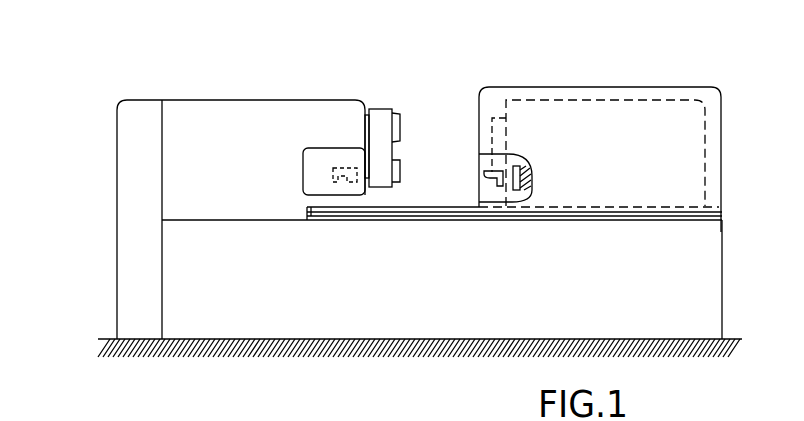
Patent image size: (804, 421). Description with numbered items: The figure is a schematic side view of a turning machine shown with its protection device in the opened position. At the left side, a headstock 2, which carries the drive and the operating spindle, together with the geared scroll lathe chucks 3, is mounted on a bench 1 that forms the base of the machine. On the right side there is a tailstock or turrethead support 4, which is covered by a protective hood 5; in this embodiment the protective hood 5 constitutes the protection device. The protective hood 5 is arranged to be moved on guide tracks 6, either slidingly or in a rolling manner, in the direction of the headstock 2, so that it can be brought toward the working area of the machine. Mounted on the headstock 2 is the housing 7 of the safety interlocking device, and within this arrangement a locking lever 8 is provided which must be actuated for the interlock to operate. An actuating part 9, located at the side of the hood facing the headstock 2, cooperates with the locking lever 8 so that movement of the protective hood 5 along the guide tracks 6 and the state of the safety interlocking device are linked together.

The bench 1 is at (216, 263).
The headstock 2 is at (246, 118).
The geared scroll lathe chucks 3 is at (382, 120).
The tailstock or turrethead support 4 is at (549, 118).
The protective hood 5 is at (654, 87).
The guide tracks 6 is at (721, 212).
The housing 7 is at (312, 178).
The locking lever 8 is at (338, 179).
The actuating part 9 is at (502, 180).